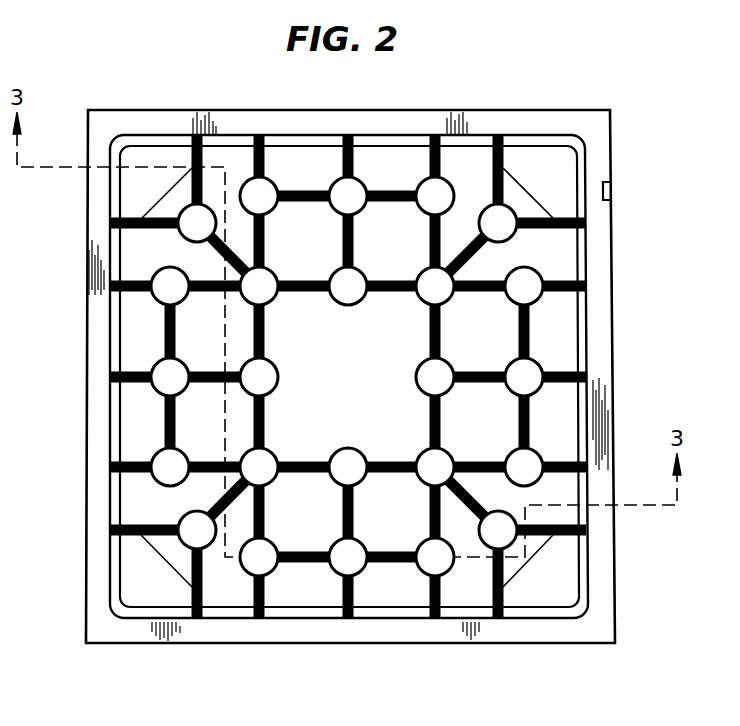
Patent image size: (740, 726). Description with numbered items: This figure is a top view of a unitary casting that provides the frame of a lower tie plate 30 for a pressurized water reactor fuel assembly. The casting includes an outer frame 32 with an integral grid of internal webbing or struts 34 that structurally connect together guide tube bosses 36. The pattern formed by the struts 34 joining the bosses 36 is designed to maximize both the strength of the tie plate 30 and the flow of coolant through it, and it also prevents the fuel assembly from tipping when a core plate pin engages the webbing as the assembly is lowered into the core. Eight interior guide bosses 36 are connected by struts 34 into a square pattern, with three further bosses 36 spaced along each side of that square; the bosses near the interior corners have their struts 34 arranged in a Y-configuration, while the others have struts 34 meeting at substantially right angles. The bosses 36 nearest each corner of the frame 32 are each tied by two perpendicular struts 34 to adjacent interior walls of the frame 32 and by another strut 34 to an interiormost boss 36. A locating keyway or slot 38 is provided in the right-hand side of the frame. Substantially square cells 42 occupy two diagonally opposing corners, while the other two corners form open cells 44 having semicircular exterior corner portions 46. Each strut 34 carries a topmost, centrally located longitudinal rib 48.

The lower tie plate 30 is at (84, 360).
The outer frame 32 is at (603, 332).
The struts 34 is at (204, 158).
The guide tube bosses 36 is at (277, 211).
The locating keyway 38 is at (612, 184).
The square cells 42 is at (540, 162).
The open cells 44 is at (141, 190).
The semicircular exterior corner portions 46 is at (150, 142).
The longitudinal rib 48 is at (175, 332).